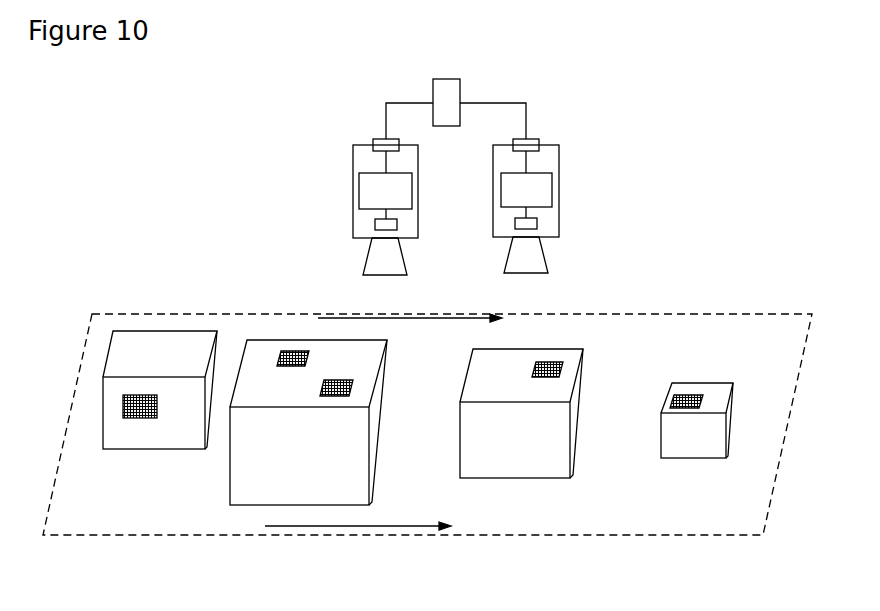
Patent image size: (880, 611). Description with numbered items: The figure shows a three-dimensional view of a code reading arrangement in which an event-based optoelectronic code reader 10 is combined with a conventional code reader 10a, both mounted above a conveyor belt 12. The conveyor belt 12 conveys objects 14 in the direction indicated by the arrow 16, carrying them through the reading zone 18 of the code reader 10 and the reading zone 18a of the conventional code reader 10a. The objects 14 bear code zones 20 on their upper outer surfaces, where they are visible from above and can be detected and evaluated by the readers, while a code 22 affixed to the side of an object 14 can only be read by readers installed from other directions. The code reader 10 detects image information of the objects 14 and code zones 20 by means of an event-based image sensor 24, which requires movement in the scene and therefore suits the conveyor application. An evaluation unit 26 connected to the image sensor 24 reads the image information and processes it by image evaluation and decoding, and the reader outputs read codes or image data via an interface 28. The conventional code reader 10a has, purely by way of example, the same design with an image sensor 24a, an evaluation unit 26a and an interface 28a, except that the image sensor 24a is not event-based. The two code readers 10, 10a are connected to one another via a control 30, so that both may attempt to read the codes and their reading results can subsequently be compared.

The optoelectronic code reader 10 is at (337, 109).
The conventional code reader 10a is at (583, 109).
The conveyor belt 12 is at (427, 449).
The objects 14 is at (418, 425).
The arrow 16 is at (358, 553).
The reading zone 18 is at (413, 223).
The reading zone 18a is at (578, 224).
The code zones 20 is at (490, 340).
The code 22 is at (127, 440).
The image sensor 24 is at (348, 228).
The image sensor 24a is at (570, 240).
The evaluation unit 26 is at (356, 189).
The evaluation unit 26a is at (564, 191).
The interface 28 is at (369, 122).
The interface 28a is at (555, 122).
The control 30 is at (464, 85).